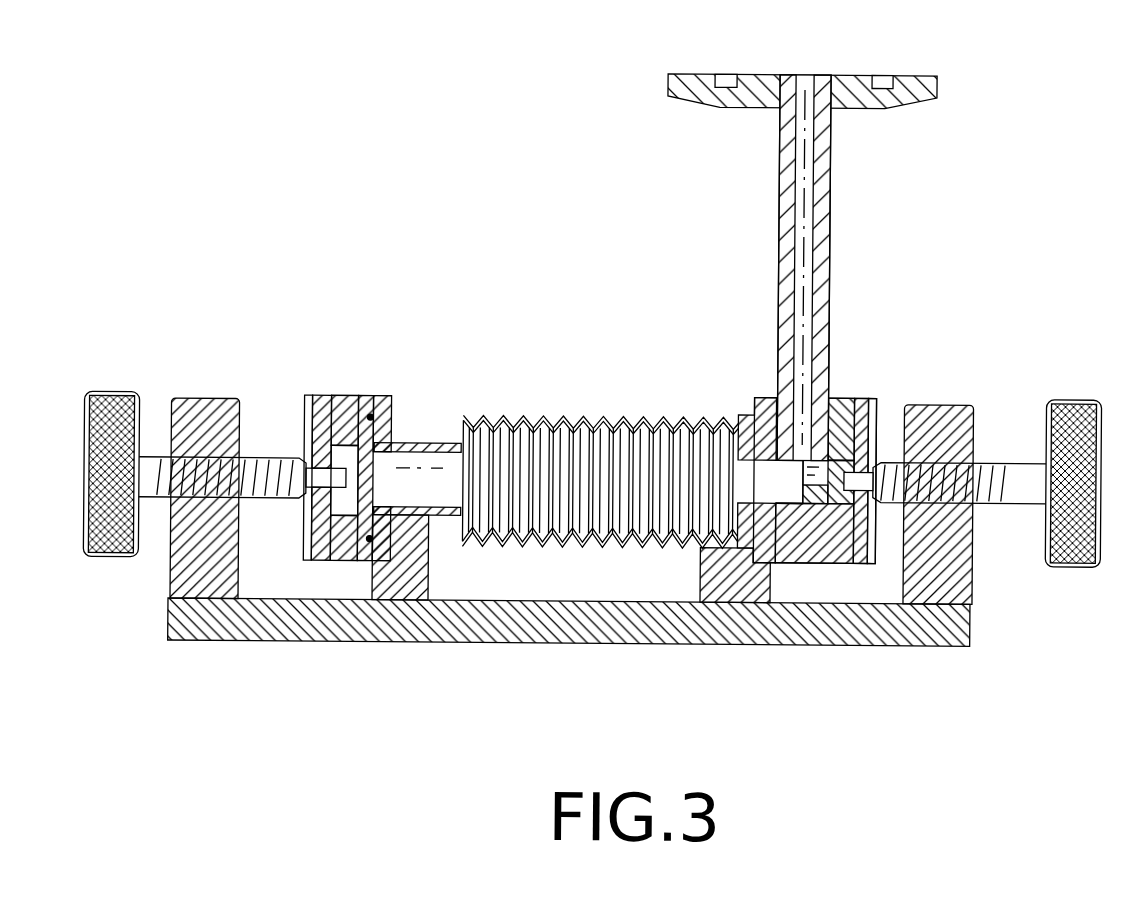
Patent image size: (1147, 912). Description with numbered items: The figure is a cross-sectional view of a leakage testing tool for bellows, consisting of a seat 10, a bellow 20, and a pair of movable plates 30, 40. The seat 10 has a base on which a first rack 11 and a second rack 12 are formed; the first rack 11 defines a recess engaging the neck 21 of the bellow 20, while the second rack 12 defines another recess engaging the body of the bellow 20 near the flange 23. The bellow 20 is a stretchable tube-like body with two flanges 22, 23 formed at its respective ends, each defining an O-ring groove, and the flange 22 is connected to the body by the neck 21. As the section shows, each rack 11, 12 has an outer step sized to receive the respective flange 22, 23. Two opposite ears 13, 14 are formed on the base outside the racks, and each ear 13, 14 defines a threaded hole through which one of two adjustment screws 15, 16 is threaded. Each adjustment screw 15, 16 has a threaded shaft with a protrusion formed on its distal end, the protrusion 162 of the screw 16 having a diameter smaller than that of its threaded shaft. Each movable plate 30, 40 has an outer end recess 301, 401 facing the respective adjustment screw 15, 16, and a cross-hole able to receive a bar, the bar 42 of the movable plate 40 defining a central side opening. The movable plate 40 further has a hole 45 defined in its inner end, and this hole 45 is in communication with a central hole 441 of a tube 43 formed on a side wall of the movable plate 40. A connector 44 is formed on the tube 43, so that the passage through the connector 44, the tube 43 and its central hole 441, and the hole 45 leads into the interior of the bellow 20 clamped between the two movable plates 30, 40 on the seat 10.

The seat 10 is at (549, 637).
The first rack 11 is at (429, 568).
The second rack 12 is at (713, 568).
The ear 13 is at (178, 562).
The ear 14 is at (967, 564).
The adjustment screw 15 is at (118, 392).
The adjustment screw 16 is at (1083, 393).
The bellow 20 is at (568, 407).
The neck 21 is at (435, 439).
The flange 22 is at (369, 415).
The flange 23 is at (765, 391).
The movable plate 30 is at (335, 390).
The outer end recess 301 is at (345, 422).
The movable plate 40 is at (861, 374).
The outer end recess 401 is at (833, 392).
The bar 42 is at (870, 392).
The tube 43 is at (838, 196).
The connector 44 is at (851, 75).
The central hole 441 is at (798, 75).
The hole 45 is at (776, 485).
The protrusion 162 is at (817, 462).